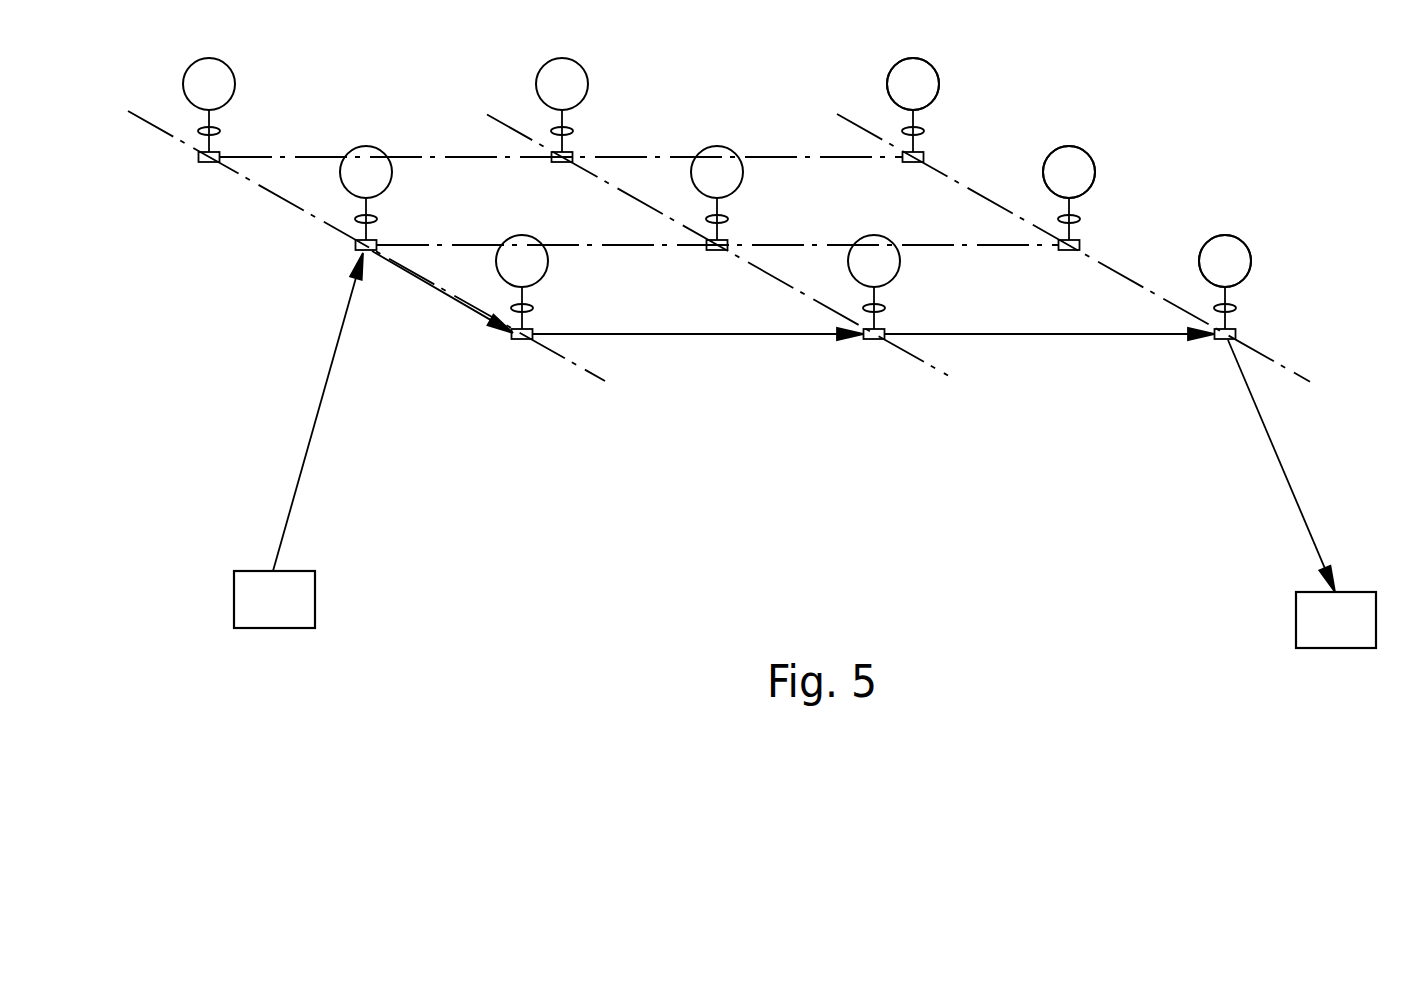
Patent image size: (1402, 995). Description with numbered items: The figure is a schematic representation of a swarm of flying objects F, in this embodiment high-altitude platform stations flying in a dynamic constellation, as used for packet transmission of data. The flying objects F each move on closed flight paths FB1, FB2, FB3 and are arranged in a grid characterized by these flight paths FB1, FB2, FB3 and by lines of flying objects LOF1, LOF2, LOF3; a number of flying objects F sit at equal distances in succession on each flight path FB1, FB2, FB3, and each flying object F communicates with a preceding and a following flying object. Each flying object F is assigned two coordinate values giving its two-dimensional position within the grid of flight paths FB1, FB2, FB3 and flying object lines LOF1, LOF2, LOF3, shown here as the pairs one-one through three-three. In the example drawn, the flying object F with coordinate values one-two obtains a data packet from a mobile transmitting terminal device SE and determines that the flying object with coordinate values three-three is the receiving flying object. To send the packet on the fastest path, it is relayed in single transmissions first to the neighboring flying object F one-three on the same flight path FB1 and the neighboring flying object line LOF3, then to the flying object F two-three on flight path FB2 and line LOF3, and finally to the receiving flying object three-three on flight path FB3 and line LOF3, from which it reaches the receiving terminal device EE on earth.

The flight path FB1 is at (348, 223).
The flight path FB2 is at (700, 221).
The flight path FB3 is at (1055, 225).
The line of flying objects LOF1 is at (513, 162).
The line of flying objects LOF2 is at (665, 252).
The line of flying objects LOF3 is at (793, 307).
The flying object F is at (933, 65).
The transmitting terminal device SE is at (297, 614).
The receiving terminal device EE is at (1359, 635).